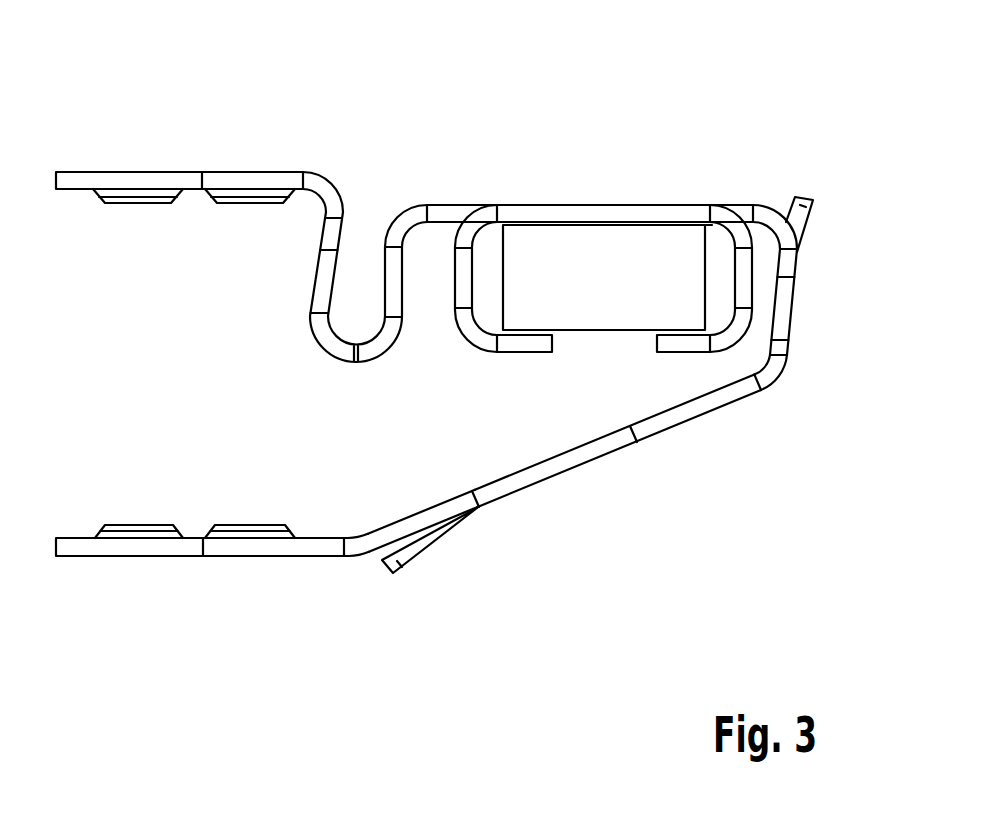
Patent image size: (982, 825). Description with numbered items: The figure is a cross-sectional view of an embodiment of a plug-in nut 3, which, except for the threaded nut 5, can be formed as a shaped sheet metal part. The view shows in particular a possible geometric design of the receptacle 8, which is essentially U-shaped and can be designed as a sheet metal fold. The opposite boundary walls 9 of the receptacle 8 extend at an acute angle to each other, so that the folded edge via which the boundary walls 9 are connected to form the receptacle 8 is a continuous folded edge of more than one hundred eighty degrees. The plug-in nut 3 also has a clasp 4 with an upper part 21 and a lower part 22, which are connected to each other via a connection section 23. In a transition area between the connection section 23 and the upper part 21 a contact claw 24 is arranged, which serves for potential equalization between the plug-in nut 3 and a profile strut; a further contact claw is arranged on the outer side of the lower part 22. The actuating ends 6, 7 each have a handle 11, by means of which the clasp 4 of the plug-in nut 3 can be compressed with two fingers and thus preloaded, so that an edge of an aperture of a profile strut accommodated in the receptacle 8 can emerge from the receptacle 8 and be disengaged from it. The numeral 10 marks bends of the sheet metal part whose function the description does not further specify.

The plug-in nut 3 is at (754, 90).
The clasp 4 is at (678, 453).
The threaded nut 5 is at (597, 317).
The actuating end 6 is at (177, 142).
The actuating end 7 is at (184, 588).
The receptacle 8 is at (363, 222).
The boundary walls 9 is at (318, 279).
The bends 10 is at (355, 364).
The handle 11 is at (90, 180).
The upper part 21 is at (569, 200).
The lower part 22 is at (494, 516).
The connection section 23 is at (797, 303).
The contact claw 24 is at (803, 200).